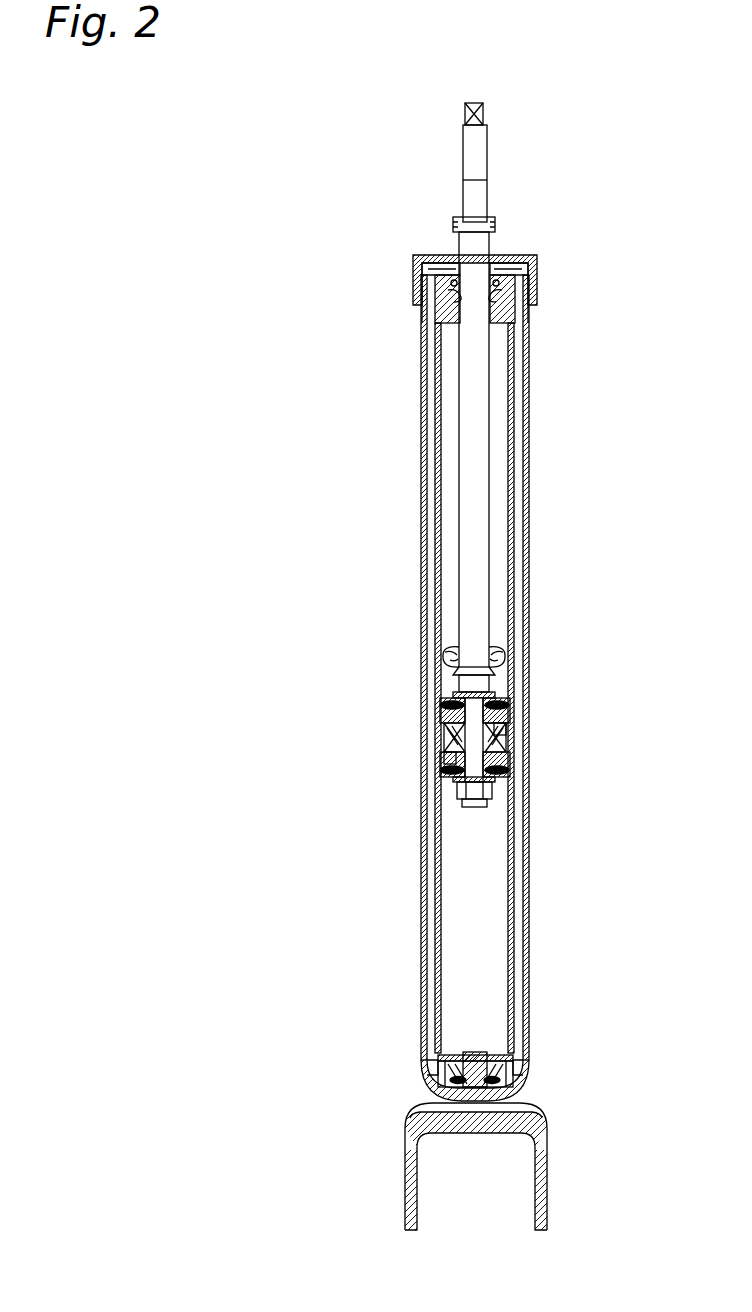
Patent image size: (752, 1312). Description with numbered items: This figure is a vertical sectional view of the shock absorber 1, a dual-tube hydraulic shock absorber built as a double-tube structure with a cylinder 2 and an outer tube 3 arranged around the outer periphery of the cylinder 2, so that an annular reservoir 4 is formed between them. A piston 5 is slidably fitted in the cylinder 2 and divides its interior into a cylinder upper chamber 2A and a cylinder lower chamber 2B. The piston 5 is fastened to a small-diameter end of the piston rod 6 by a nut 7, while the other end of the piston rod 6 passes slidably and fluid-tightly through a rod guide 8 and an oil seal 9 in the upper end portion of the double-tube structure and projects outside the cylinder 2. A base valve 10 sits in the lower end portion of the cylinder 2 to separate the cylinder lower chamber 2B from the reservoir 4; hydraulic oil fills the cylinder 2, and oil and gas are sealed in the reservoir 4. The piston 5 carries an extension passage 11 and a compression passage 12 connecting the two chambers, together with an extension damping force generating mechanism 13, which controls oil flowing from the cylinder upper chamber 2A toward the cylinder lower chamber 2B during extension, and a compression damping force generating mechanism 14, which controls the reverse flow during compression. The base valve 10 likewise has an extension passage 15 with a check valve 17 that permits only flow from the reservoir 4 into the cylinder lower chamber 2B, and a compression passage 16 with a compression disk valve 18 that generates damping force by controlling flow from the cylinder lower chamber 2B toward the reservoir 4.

The shock absorber 1 is at (600, 257).
The cylinder 2 is at (512, 388).
The cylinder upper chamber 2A is at (500, 520).
The cylinder lower chamber 2B is at (483, 940).
The outer tube 3 is at (528, 438).
The reservoir 4 is at (424, 467).
The piston 5 is at (510, 742).
The piston rod 6 is at (488, 248).
The nut 7 is at (460, 790).
The rod guide 8 is at (518, 318).
The oil seal 9 is at (518, 268).
The base valve 10 is at (515, 1075).
The extension passage 11 is at (510, 730).
The compression passage 12 is at (440, 760).
The extension damping force generating mechanism 13 is at (510, 768).
The compression damping force generating mechanism 14 is at (440, 715).
The extension passage 15 is at (430, 1070).
The compression passage 16 is at (492, 1062).
The check valve 17 is at (455, 1068).
The compression disk valve 18 is at (490, 1103).